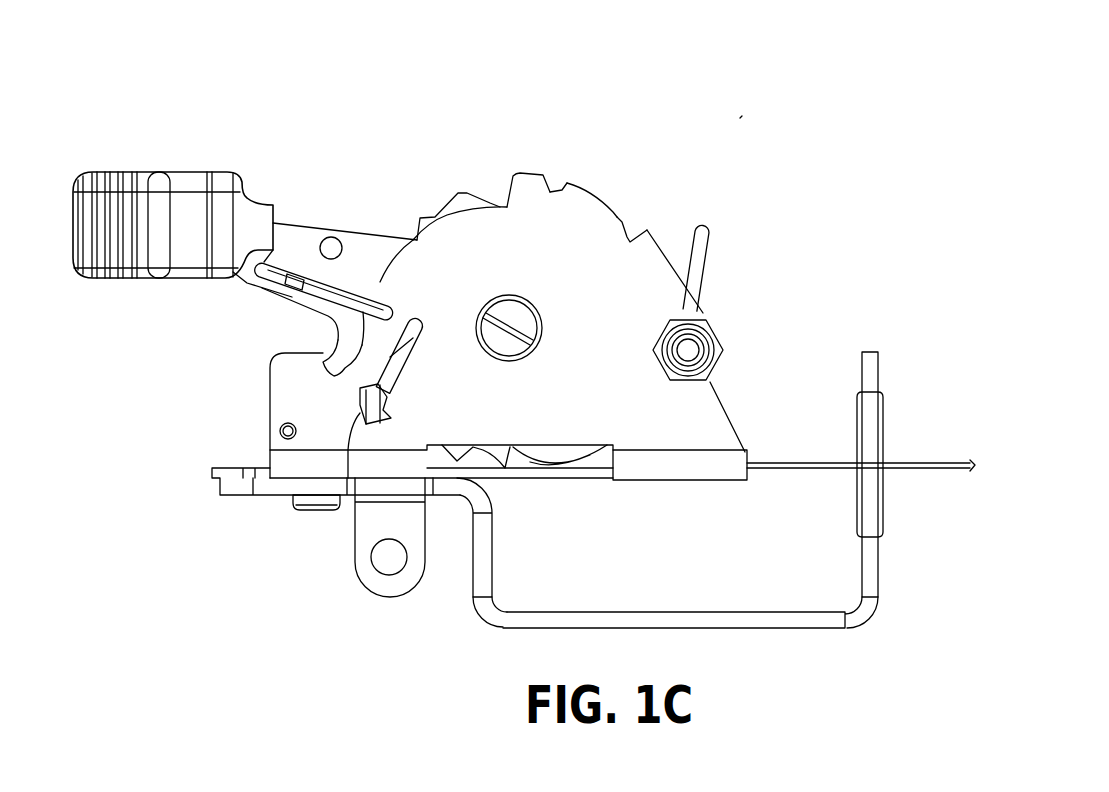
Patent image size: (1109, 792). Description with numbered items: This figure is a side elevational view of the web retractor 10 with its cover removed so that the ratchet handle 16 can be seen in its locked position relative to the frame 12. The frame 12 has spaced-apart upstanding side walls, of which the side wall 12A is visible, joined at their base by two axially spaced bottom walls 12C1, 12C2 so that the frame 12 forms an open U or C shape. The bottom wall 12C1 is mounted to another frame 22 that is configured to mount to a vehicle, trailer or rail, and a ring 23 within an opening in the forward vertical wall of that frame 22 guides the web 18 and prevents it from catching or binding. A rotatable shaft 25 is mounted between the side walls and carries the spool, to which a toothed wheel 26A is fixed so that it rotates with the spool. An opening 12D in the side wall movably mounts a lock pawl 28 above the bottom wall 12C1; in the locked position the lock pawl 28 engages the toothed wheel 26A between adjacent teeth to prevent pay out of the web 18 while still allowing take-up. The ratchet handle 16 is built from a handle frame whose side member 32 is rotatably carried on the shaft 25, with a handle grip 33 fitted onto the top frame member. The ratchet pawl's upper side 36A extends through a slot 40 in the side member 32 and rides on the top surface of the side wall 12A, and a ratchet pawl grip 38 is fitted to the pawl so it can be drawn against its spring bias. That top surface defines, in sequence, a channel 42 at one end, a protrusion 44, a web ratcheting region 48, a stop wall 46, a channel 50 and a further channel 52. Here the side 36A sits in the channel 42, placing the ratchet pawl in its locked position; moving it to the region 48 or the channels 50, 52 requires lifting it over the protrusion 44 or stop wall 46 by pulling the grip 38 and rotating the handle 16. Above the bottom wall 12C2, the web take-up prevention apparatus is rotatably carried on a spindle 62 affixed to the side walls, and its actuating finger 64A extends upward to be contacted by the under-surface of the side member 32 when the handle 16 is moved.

The web retractor 10 is at (748, 113).
The frame 12 is at (740, 500).
The side wall 12A is at (707, 420).
The bottom wall 12C1 is at (222, 466).
The bottom wall 12C2 is at (637, 481).
The opening 12D is at (410, 362).
The ratchet handle 16 is at (108, 140).
The web 18 is at (930, 462).
The frame 22 is at (785, 630).
The ring 23 is at (885, 512).
The shaft 25 is at (512, 318).
The toothed wheel 26A is at (470, 197).
The lock pawl 28 is at (347, 497).
The side member 32 is at (287, 232).
The handle grip 33 is at (148, 172).
The upper side of ratchet pawl 36A is at (332, 323).
The ratchet pawl grip 38 is at (290, 297).
The slot 40 is at (276, 270).
The channel 42 is at (346, 364).
The protrusion 44 is at (353, 282).
The stop wall 46 is at (508, 178).
The web ratcheting region 48 is at (430, 216).
The channel 50 is at (552, 186).
The channel 52 is at (630, 226).
The spindle 62 is at (690, 350).
The actuating finger 64A is at (703, 247).